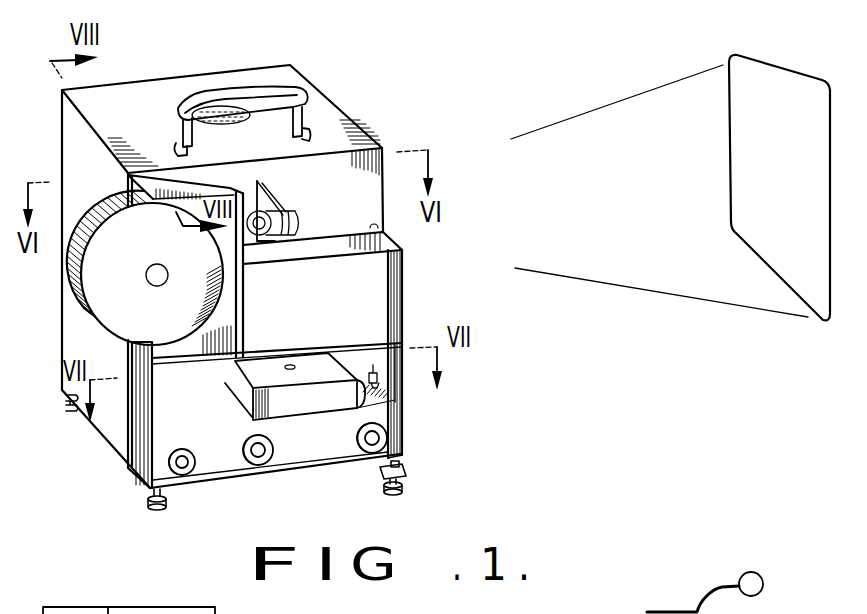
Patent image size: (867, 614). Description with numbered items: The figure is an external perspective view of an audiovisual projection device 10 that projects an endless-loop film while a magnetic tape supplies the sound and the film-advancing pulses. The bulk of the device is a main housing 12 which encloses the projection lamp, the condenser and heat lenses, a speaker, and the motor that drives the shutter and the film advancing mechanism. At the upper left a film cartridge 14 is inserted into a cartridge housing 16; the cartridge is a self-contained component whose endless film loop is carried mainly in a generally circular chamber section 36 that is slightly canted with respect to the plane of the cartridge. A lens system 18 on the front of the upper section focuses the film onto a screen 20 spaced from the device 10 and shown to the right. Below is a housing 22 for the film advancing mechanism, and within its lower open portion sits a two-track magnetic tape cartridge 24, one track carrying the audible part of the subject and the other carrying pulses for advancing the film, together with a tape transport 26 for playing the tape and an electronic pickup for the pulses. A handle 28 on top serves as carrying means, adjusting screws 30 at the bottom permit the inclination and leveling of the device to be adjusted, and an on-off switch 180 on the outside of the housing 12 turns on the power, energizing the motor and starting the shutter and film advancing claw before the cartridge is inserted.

The audiovisual projection device 10 is at (338, 90).
The main housing 12 is at (150, 86).
The film cartridge 14 is at (103, 280).
The cartridge housing 16 is at (155, 180).
The lens system 18 is at (290, 207).
The screen 20 is at (795, 185).
The housing for the film advancing mechanism 22 is at (390, 302).
The two-track magnetic tape cartridge 24 is at (317, 405).
The tape transport 26 is at (300, 453).
The handle 28 is at (227, 92).
The adjusting screws 30 is at (407, 482).
The circular chamber section 36 is at (200, 312).
The on-off switch 180 is at (185, 477).